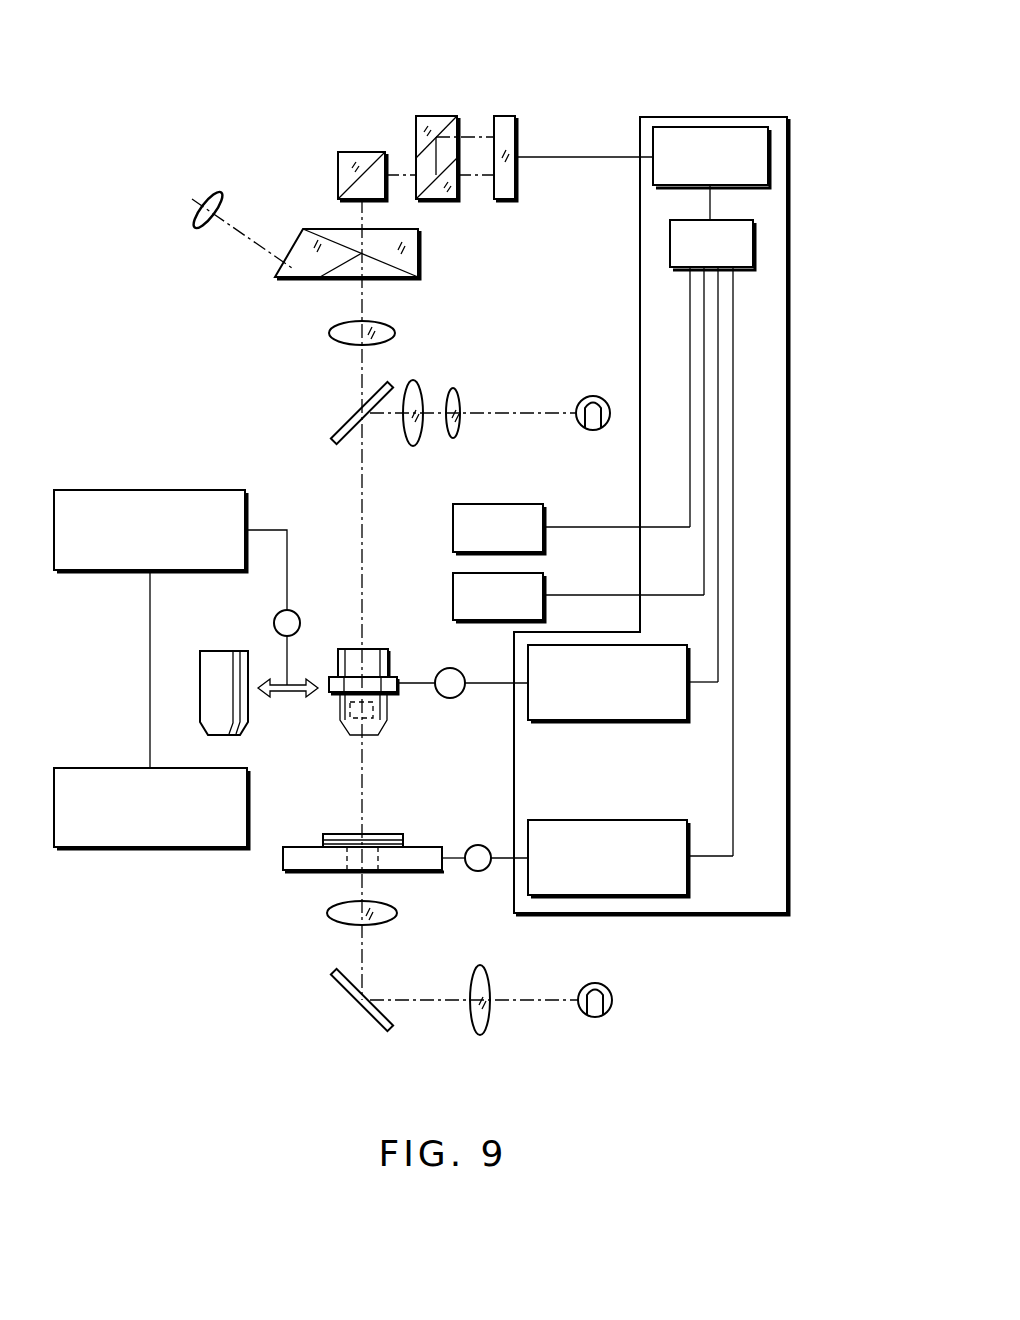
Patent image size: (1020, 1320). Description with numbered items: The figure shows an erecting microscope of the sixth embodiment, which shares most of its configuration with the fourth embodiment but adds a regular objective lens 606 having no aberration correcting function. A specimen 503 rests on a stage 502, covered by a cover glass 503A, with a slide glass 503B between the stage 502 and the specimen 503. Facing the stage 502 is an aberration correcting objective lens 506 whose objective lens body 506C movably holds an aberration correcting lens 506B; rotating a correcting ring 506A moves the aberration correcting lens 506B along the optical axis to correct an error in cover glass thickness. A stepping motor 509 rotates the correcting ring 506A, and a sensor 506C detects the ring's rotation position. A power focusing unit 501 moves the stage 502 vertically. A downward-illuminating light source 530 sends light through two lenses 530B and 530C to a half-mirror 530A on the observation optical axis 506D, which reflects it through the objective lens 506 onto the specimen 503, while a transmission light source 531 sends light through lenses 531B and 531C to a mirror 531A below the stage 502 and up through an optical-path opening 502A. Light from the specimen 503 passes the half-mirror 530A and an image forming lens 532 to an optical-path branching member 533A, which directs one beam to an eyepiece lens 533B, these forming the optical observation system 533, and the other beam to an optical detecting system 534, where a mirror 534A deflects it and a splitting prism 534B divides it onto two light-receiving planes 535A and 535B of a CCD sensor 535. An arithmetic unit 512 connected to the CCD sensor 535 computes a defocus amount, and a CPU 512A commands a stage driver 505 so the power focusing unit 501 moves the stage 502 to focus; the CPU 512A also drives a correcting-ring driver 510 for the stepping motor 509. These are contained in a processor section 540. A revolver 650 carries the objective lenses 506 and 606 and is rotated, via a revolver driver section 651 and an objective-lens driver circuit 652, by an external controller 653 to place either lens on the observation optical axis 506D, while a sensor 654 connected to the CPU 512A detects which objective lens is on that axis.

The power focusing unit 501 is at (470, 870).
The stage 502 is at (283, 858).
The optical-path opening 502A is at (348, 873).
The specimen 503 is at (323, 837).
The cover glass 503A is at (375, 834).
The slide glass 503B is at (403, 842).
The stage driver 505 is at (665, 895).
The aberration correcting objective lens 506 is at (372, 648).
The correcting ring 506A is at (397, 678).
The aberration correcting lens 506B is at (387, 737).
The objective lens body / sensor 506C is at (545, 585).
The observation optical axis 506D is at (358, 512).
The stepping motor 509 is at (448, 698).
The correcting-ring driver 510 is at (665, 720).
The arithmetic unit 512 is at (770, 159).
The CPU 512A is at (755, 243).
The downward-illuminating light source 530 is at (585, 398).
The half-mirror 530A is at (337, 428).
The lens 530B is at (458, 400).
The lens 530C is at (416, 385).
The transmission light source 531 is at (613, 1005).
The mirror 531A is at (350, 997).
The lens 531B is at (487, 1020).
The lens 531C is at (380, 918).
The image forming lens 532 is at (330, 333).
The optical observation system 533 is at (153, 127).
The optical-path branching member 533A is at (313, 229).
The eyepiece lens 533B is at (215, 192).
The optical detecting system 534 is at (350, 57).
The mirror 534A is at (340, 152).
The splitting prism 534B is at (423, 116).
The CCD sensor 535 is at (505, 116).
The light-receiving plane 535A is at (493, 147).
The light-receiving plane 535B is at (488, 190).
The processor section 540 is at (802, 420).
The regular objective lens 606 is at (217, 651).
The revolver 650 is at (280, 698).
The revolver driver section 651 is at (298, 616).
The objective-lens driver circuit 652 is at (118, 490).
The external controller 653 is at (85, 768).
The sensor 654 is at (520, 504).